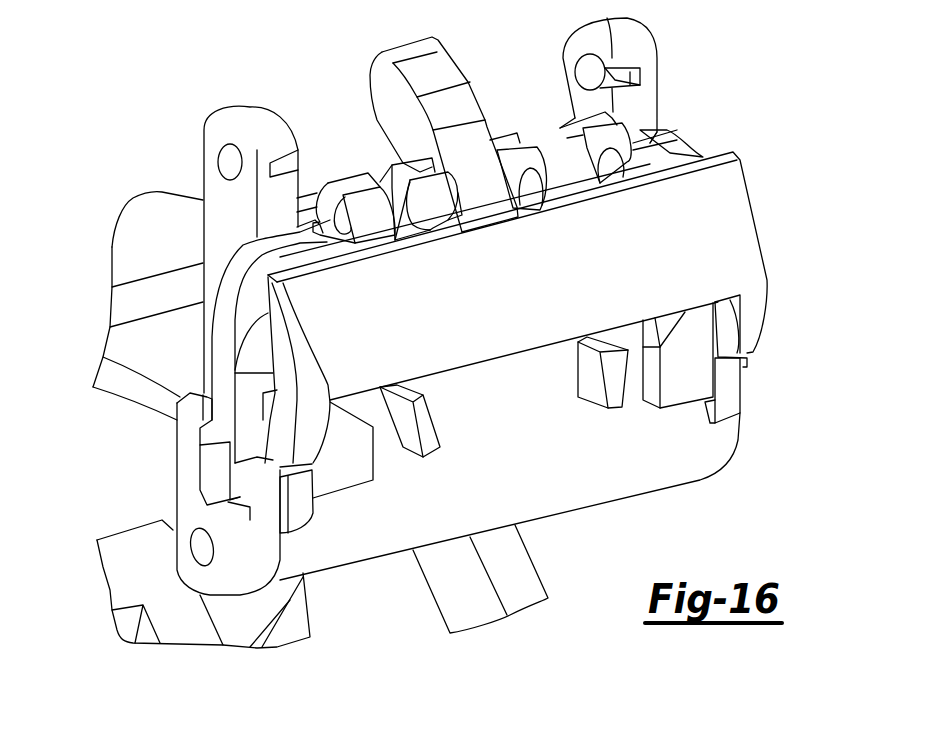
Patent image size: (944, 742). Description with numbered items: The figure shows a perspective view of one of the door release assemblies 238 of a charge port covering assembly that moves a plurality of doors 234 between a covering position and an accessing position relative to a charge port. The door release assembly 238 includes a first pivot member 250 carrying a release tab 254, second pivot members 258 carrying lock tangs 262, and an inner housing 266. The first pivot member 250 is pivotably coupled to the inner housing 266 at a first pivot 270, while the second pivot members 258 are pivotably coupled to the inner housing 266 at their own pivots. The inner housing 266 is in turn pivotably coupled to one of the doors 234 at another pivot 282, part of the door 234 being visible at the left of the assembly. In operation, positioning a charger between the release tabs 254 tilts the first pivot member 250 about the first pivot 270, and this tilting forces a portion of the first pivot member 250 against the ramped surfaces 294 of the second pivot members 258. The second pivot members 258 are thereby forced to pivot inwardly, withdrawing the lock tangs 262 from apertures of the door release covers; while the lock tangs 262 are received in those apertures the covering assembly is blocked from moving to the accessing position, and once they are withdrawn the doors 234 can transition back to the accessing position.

The door 234 is at (163, 357).
The door release assembly 238 is at (764, 158).
The first pivot member 250 is at (707, 233).
The release tab 254 is at (397, 45).
The second pivot member 258 is at (247, 405).
The lock tang 262 is at (220, 480).
The inner housing 266 is at (550, 475).
The first pivot 270 is at (653, 148).
The pivot 282 is at (200, 548).
The ramped surface 294 is at (258, 437).